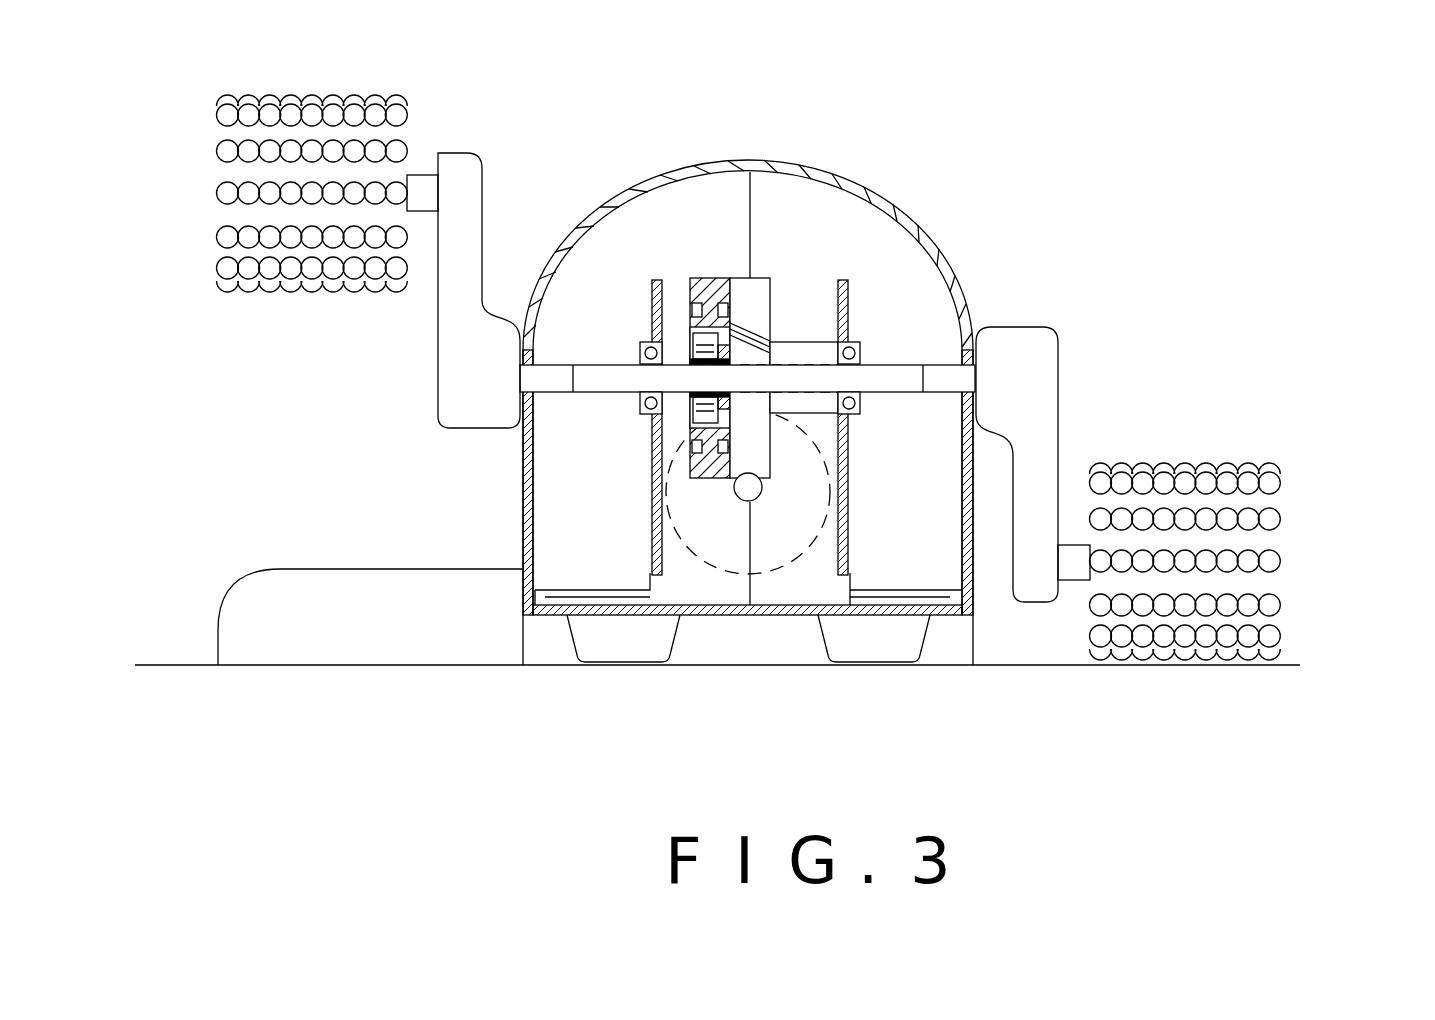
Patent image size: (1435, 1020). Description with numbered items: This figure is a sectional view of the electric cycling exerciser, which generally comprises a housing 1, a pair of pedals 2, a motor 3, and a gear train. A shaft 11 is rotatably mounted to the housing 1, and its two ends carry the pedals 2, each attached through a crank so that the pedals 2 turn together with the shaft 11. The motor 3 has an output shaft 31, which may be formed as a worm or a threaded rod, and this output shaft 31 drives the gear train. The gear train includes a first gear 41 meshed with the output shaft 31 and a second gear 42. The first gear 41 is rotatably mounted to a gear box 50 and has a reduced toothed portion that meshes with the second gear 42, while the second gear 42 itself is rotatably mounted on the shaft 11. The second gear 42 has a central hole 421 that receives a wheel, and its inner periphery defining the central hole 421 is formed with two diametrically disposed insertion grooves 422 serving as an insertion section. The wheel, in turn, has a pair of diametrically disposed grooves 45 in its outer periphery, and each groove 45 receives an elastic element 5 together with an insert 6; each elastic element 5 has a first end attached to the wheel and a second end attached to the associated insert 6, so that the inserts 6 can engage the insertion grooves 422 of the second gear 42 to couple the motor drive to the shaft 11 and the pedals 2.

The housing 1 is at (933, 233).
The pedals 2 is at (465, 185).
The motor 3 is at (810, 545).
The output shaft 31 is at (750, 500).
The elastic element 5 is at (690, 337).
The insert 6 is at (707, 327).
The shaft 11 is at (605, 380).
The first gear 41 is at (758, 318).
The second gear 42 is at (703, 278).
The central hole 421 is at (732, 320).
The insertion grooves 422 is at (708, 335).
The grooves 45 is at (690, 353).
The gear box 50 is at (657, 520).